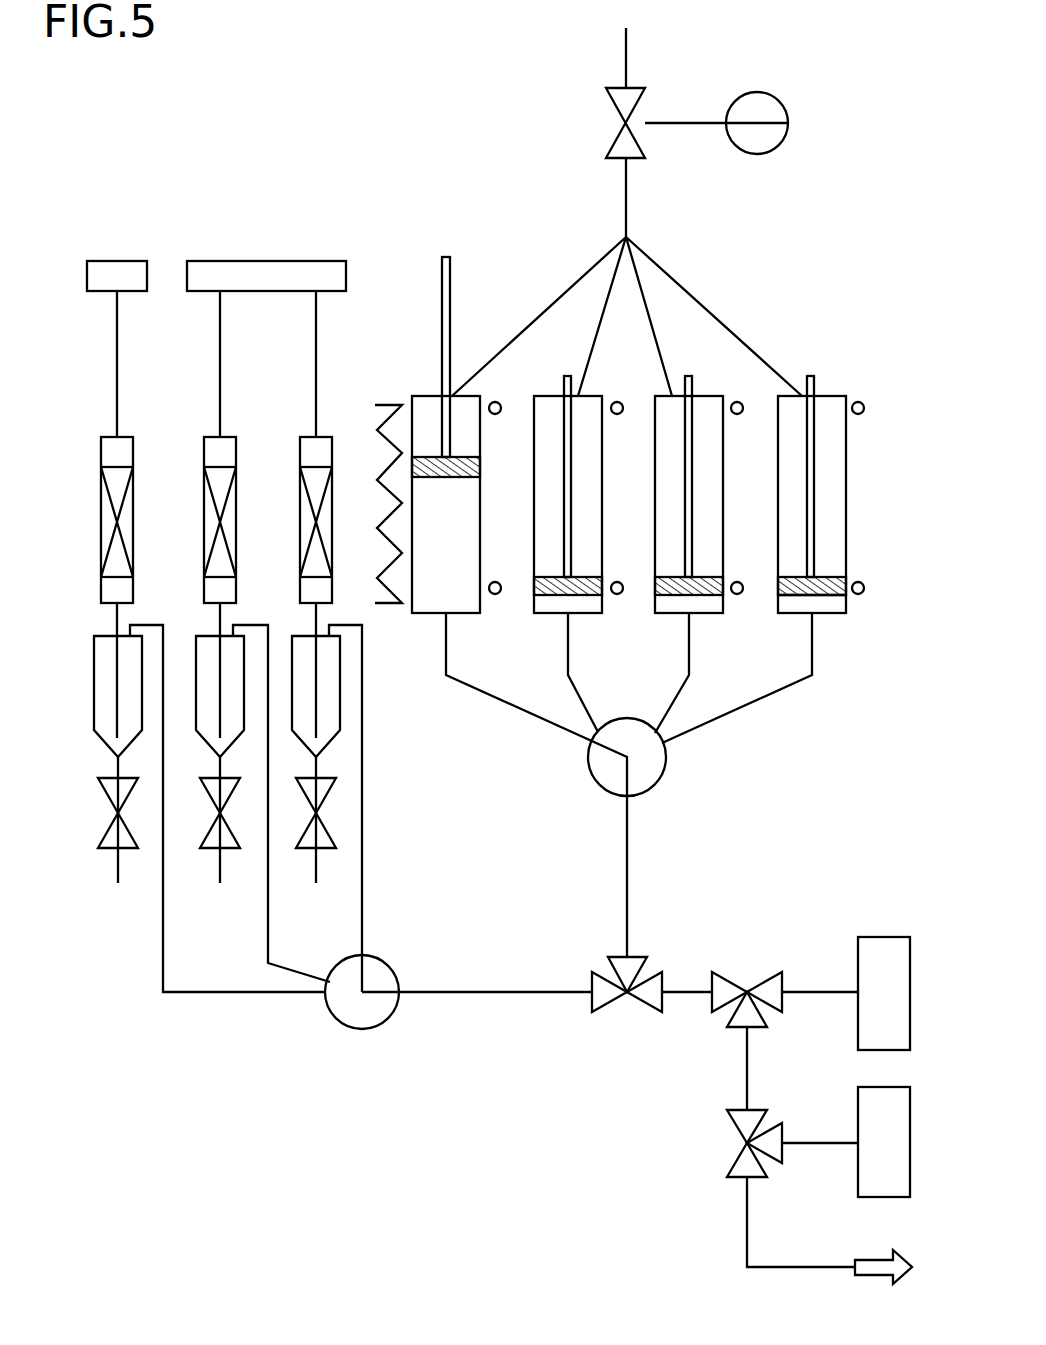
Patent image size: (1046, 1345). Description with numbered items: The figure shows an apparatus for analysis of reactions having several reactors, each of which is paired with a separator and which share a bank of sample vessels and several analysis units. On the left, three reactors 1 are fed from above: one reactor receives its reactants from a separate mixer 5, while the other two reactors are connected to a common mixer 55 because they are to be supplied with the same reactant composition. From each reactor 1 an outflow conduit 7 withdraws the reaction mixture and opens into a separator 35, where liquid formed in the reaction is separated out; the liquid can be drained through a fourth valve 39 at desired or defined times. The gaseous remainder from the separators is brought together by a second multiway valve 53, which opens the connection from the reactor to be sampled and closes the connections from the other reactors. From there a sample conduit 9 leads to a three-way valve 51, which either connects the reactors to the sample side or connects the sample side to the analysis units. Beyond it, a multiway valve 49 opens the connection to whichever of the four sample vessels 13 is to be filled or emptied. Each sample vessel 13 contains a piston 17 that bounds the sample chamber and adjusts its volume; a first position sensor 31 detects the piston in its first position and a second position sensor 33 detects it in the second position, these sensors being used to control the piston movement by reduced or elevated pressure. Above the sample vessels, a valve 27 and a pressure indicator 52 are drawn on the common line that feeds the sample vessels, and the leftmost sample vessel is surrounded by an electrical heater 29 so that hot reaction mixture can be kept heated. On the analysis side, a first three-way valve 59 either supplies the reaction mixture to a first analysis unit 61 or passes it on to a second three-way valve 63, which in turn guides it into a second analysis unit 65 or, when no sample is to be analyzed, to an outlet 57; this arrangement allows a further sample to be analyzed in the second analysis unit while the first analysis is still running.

The reactor 1 is at (101, 462).
The mixer 5 is at (130, 261).
The outflow conduit 7 is at (117, 608).
The sample conduit 9 is at (497, 992).
The sample vessel 13 is at (418, 396).
The piston 17 is at (846, 580).
The pressure valve 27 is at (606, 103).
The electrical heater 29 is at (395, 402).
The first position sensor 31 is at (496, 594).
The second position sensor 33 is at (496, 414).
The separator 35 is at (197, 667).
The fourth valve 39 is at (98, 848).
The multiway valve 49 is at (666, 765).
The 3-way valve 51 is at (600, 1012).
The pressure indicator 52 is at (783, 103).
The second multiway valve 53 is at (357, 1029).
The common mixer 55 is at (312, 261).
The outlet 57 is at (747, 1213).
The first 3-way valve 59 is at (730, 976).
The first analysis unit 61 is at (890, 937).
The second 3-way valve 63 is at (732, 1126).
The second analysis unit 65 is at (910, 1140).